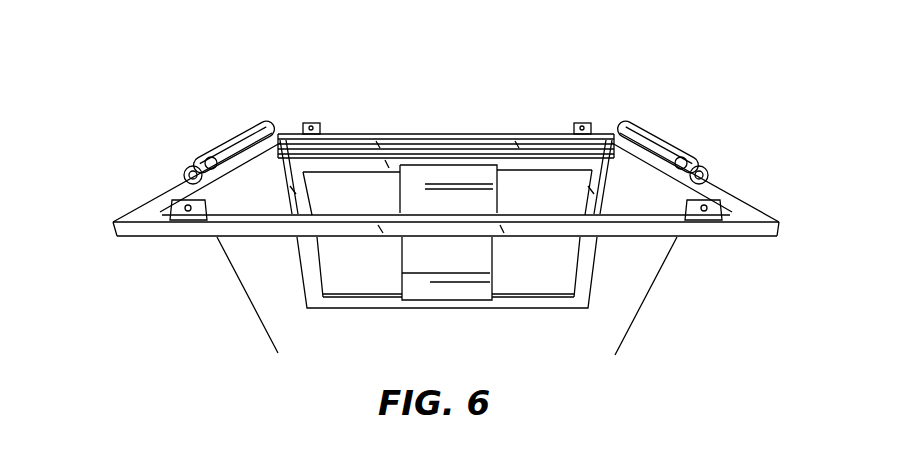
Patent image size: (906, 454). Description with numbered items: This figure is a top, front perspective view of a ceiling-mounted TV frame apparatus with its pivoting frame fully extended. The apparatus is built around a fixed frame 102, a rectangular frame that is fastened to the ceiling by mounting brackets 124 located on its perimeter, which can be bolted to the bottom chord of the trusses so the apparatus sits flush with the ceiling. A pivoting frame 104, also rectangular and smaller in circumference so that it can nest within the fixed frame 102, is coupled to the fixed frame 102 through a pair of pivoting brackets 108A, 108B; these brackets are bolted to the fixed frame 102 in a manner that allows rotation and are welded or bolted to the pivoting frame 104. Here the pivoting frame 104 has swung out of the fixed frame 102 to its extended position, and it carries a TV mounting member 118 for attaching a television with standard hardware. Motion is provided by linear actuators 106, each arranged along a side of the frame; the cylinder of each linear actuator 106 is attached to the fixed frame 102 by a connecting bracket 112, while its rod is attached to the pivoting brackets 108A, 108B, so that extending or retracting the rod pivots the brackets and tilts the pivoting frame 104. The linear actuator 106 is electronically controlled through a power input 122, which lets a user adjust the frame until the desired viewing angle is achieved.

The fixed frame 102 is at (127, 229).
The pivoting frame 104 is at (373, 303).
The linear actuator 106 is at (228, 126).
The pivoting bracket 108A is at (614, 160).
The pivoting bracket 108B is at (280, 160).
The connecting bracket 112 is at (182, 170).
The TV mounting member 118 is at (480, 258).
The power input 122 is at (243, 288).
The mounting bracket 124 is at (178, 218).